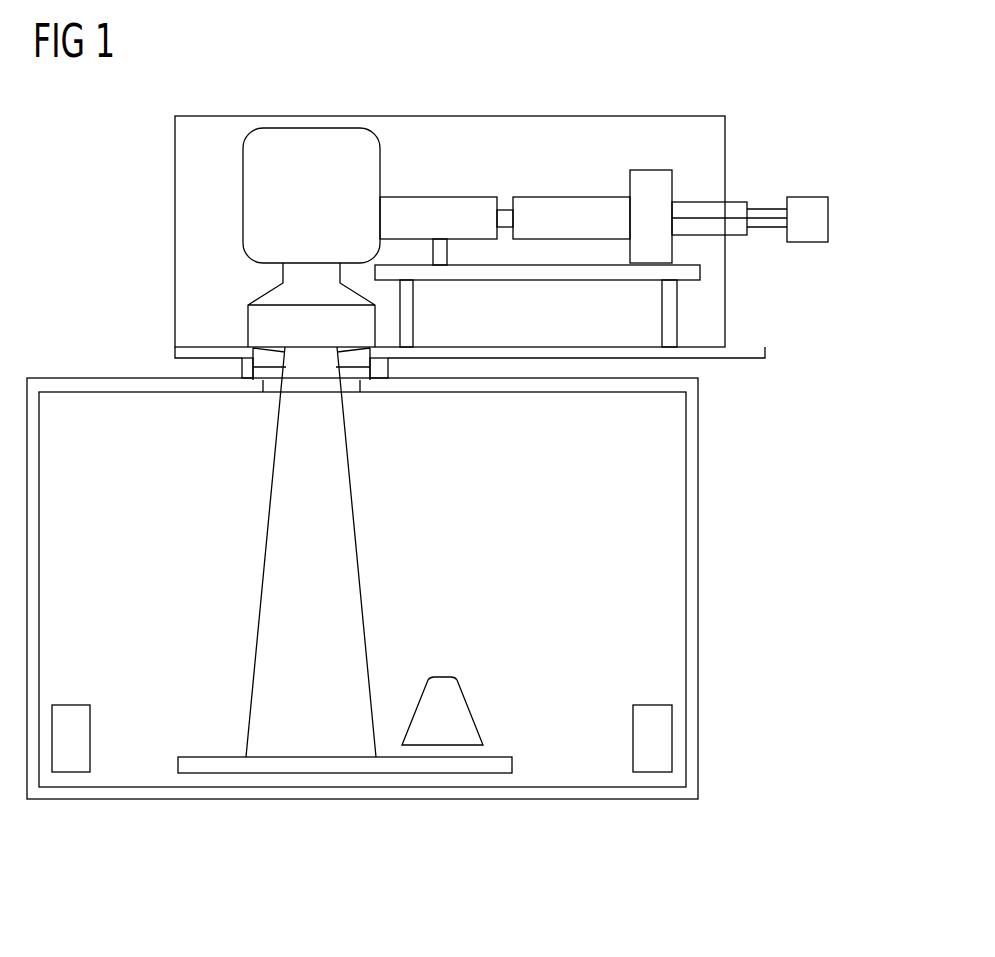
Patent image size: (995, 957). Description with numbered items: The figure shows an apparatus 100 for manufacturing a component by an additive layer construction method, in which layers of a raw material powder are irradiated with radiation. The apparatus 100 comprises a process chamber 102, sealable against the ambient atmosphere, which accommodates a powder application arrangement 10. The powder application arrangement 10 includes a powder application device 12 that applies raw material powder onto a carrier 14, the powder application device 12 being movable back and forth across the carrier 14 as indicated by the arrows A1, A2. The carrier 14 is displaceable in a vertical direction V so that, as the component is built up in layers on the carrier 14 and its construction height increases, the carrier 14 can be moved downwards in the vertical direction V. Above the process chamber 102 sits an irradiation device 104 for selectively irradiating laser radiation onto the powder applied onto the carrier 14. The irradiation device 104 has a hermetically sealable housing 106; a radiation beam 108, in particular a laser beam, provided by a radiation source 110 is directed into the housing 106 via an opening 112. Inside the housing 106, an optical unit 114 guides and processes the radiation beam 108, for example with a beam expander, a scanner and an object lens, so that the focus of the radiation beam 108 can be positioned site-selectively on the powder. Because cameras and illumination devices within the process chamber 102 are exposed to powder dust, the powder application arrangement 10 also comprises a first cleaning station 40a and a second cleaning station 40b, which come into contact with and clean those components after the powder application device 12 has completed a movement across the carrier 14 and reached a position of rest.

The apparatus 100 is at (756, 472).
The process chamber 102 is at (699, 592).
The irradiation device 104 is at (809, 162).
The housing 106 is at (452, 115).
The radiation beam 108 is at (698, 212).
The radiation source 110 is at (810, 241).
The opening 112 is at (728, 201).
The optical unit 114 is at (556, 150).
The powder application arrangement 10 is at (500, 575).
The powder application device 12 is at (444, 676).
The carrier 14 is at (544, 745).
The first cleaning station 40a is at (70, 704).
The second cleaning station 40b is at (652, 704).
The arrow A1 is at (410, 696).
The arrow A2 is at (535, 696).
The vertical direction V is at (311, 773).